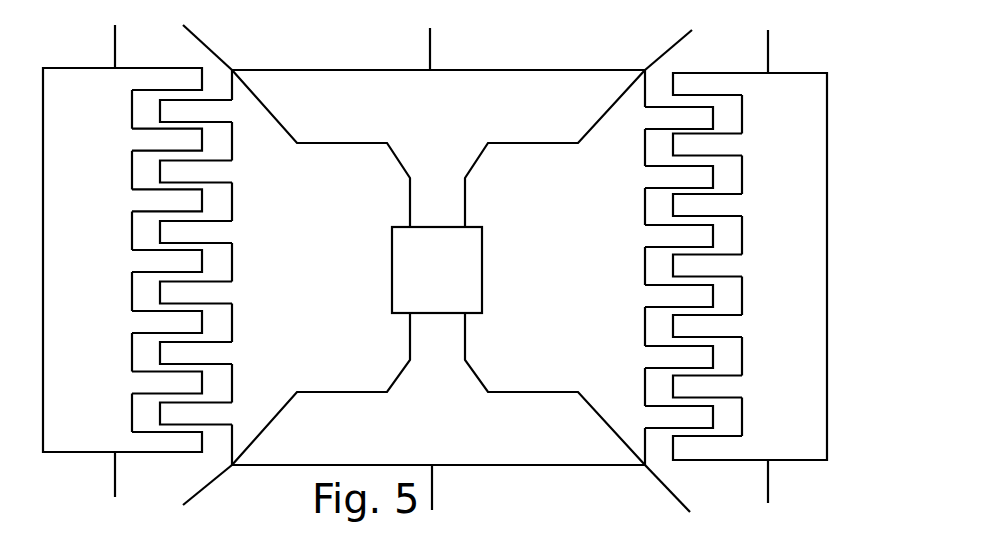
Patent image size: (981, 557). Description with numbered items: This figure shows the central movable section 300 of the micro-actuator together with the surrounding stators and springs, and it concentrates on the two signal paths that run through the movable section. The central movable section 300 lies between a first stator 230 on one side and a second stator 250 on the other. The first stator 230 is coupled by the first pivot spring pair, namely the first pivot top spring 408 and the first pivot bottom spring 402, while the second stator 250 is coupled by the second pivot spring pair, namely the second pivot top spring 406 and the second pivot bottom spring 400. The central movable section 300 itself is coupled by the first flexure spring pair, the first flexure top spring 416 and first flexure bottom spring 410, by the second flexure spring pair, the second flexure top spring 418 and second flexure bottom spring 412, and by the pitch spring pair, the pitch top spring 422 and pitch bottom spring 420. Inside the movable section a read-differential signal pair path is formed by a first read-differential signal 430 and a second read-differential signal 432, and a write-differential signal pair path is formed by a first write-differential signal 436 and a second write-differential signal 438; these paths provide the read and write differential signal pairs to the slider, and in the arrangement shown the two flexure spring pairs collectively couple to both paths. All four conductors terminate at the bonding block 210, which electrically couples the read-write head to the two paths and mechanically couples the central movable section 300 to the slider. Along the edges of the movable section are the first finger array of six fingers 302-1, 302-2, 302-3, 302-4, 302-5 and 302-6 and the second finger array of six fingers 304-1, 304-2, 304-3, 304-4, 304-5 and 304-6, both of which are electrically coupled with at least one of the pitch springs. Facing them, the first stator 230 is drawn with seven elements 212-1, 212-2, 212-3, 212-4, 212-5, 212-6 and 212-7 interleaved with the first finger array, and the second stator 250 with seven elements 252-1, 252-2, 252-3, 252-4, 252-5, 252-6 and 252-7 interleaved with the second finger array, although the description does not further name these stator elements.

The bonding block 210 is at (437, 270).
The first stator 230 is at (84, 272).
The second stator 250 is at (813, 278).
The central movable section 300 is at (538, 271).
The first electrode finger 212-1 is at (177, 85).
The first electrode finger 212-2 is at (165, 140).
The first electrode finger 212-3 is at (165, 203).
The first electrode finger 212-4 is at (162, 260).
The first electrode finger 212-5 is at (165, 325).
The first electrode finger 212-6 is at (157, 383).
The first electrode finger 212-7 is at (158, 447).
The second electrode finger 252-1 is at (723, 85).
The second electrode finger 252-2 is at (723, 142).
The second electrode finger 252-3 is at (723, 210).
The second electrode finger 252-4 is at (723, 270).
The second electrode finger 252-5 is at (723, 327).
The second electrode finger 252-6 is at (723, 390).
The second electrode finger 252-7 is at (723, 450).
The first finger of first finger array 302-1 is at (228, 112).
The second finger of first finger array 302-2 is at (230, 168).
The third finger of first finger array 302-3 is at (230, 232).
The fourth finger of first finger array 302-4 is at (228, 295).
The fifth finger of first finger array 302-5 is at (228, 352).
The sixth finger of first finger array 302-6 is at (228, 413).
The first finger of second finger array 304-1 is at (645, 115).
The second finger of second finger array 304-2 is at (643, 172).
The third finger of second finger array 304-3 is at (645, 235).
The fourth finger of second finger array 304-4 is at (645, 295).
The fifth finger of second finger array 304-5 is at (645, 352).
The sixth finger of second finger array 304-6 is at (645, 415).
The second pivot bottom spring 400 is at (768, 468).
The first pivot bottom spring 402 is at (118, 463).
The second pivot top spring 406 is at (770, 63).
The first pivot top spring 408 is at (120, 60).
The first flexure bottom spring 410 is at (218, 473).
The second flexure bottom spring 412 is at (660, 478).
The first flexure top spring 416 is at (207, 48).
The second flexure top spring 418 is at (657, 57).
The pitch bottom spring 420 is at (434, 480).
The pitch top spring 422 is at (432, 65).
The first read-differential signal 430 is at (318, 390).
The second read-differential signal 432 is at (542, 390).
The first write-differential signal 436 is at (322, 143).
The second write-differential signal 438 is at (542, 143).